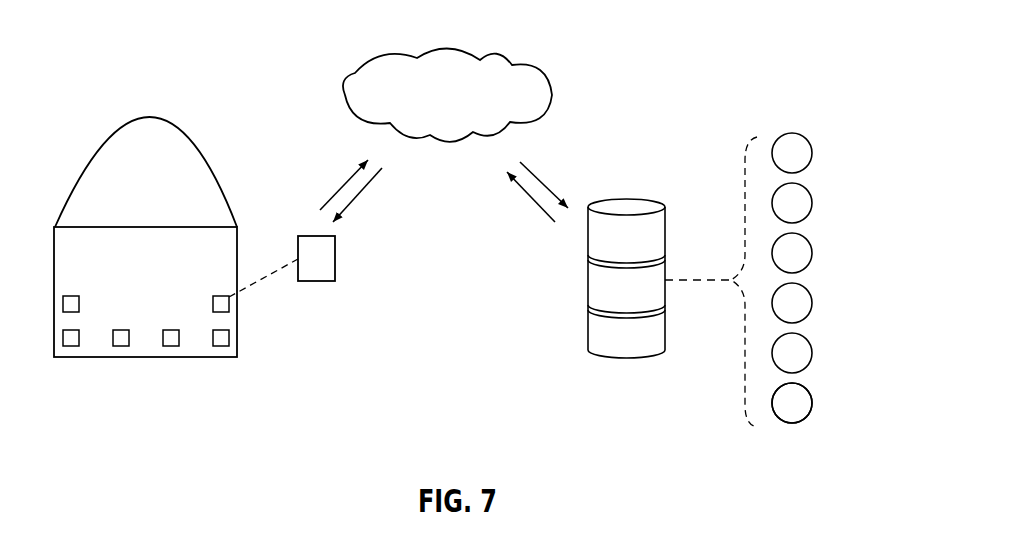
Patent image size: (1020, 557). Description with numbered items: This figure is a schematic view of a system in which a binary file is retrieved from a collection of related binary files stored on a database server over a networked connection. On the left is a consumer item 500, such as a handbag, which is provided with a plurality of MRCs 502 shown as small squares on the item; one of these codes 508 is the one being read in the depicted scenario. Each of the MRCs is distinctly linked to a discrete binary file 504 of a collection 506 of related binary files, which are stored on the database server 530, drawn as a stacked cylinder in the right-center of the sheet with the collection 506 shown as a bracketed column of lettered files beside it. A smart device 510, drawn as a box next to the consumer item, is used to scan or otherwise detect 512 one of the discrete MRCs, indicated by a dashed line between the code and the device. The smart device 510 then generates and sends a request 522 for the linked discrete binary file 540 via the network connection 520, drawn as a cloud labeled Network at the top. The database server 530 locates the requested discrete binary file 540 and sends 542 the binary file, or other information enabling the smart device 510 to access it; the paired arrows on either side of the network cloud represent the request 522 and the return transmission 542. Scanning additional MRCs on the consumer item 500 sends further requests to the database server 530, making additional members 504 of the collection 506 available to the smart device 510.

The consumer item 500 is at (207, 357).
The MRCs 502 is at (72, 339).
The discrete binary file 504 is at (812, 153).
The collection of related binary files 506 is at (793, 112).
The sensor 508 is at (221, 295).
The smart device 510 is at (335, 274).
The scan or detect 512 is at (263, 278).
The network connection 520 is at (448, 54).
The request 522 is at (345, 178).
The database server 530 is at (626, 358).
The requested discrete binary file 540 is at (800, 416).
The sending of binary file 542 is at (373, 182).